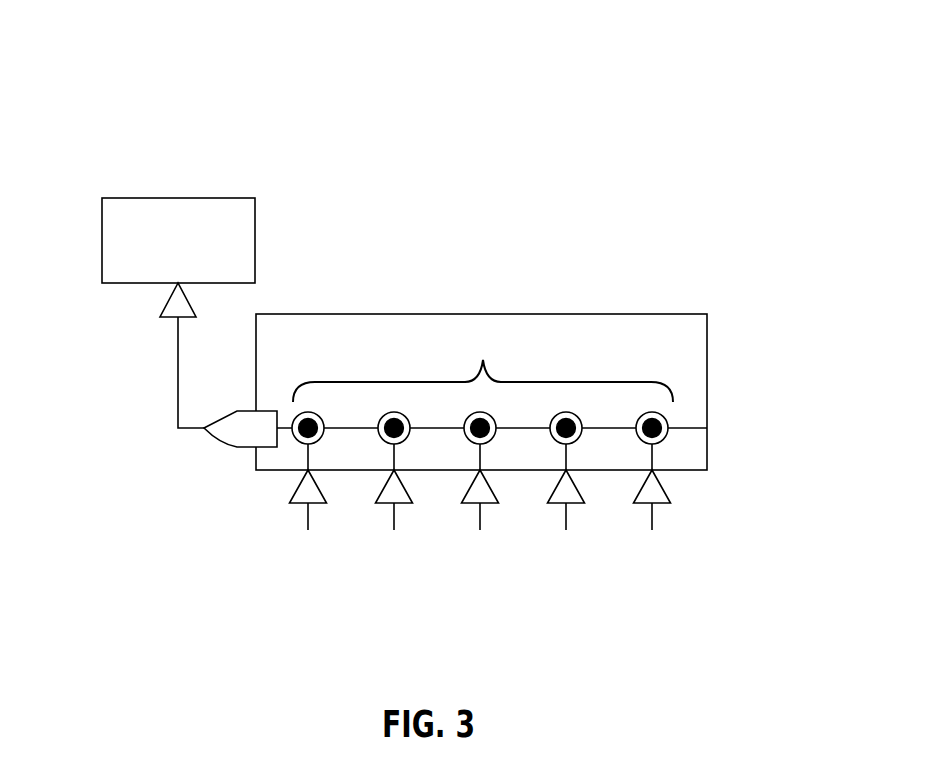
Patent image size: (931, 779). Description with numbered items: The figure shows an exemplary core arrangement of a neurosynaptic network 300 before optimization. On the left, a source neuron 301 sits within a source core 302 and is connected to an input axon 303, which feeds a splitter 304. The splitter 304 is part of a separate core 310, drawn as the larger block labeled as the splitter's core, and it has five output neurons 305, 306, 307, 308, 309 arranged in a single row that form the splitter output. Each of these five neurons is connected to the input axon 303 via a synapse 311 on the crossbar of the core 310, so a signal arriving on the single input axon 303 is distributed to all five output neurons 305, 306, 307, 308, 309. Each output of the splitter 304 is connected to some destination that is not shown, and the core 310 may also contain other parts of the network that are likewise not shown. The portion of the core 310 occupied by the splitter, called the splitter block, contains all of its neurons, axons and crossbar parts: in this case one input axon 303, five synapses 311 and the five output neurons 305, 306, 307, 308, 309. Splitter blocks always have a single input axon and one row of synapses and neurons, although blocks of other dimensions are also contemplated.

The neurosynaptic network 300 is at (448, 53).
The source neuron 301 is at (165, 302).
The source core 302 is at (225, 197).
The input axon 303 is at (222, 440).
The splitter 304 is at (483, 364).
The output neuron 305 is at (310, 493).
The output neuron 306 is at (396, 493).
The output neuron 307 is at (482, 493).
The output neuron 308 is at (568, 493).
The output neuron 309 is at (654, 493).
The core 310 is at (589, 315).
The synapse 311 is at (707, 428).